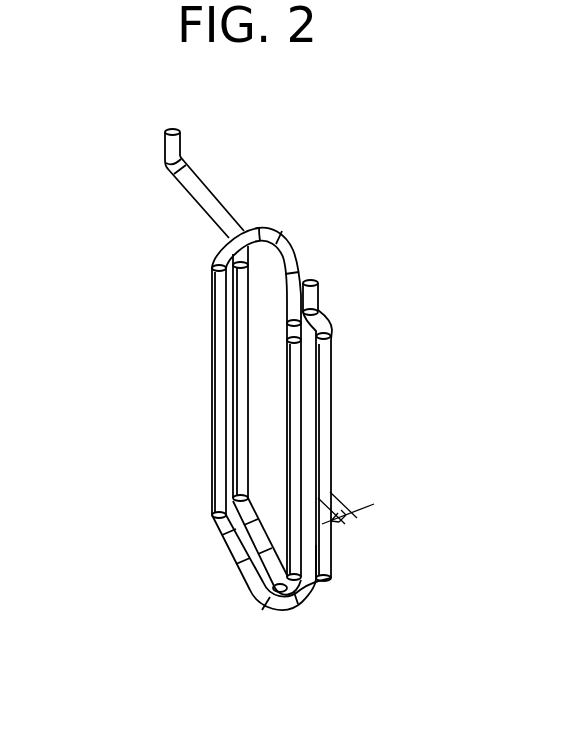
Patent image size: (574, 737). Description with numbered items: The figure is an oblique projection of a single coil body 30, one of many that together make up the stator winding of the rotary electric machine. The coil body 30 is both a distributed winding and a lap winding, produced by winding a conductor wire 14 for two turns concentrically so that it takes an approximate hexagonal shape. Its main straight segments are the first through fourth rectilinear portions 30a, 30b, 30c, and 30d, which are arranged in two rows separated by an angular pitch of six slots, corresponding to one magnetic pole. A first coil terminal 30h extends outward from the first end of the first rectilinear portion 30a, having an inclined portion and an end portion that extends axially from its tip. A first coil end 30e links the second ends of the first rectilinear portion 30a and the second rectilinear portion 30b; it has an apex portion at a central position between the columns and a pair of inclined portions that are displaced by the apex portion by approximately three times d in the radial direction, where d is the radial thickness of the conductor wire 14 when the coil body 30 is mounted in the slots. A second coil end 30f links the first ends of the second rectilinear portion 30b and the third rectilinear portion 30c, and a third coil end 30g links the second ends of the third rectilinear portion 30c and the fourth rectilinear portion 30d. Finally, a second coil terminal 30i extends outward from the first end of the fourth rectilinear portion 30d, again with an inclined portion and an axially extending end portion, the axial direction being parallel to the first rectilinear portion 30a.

The coil body 30 is at (77, 91).
The first rectilinear portion 30a is at (323, 403).
The second rectilinear portion 30b is at (214, 418).
The third rectilinear portion 30c is at (298, 458).
The fourth rectilinear portion 30d is at (247, 366).
The first coil end 30e is at (250, 582).
The second coil end 30f is at (290, 235).
The third coil end 30g is at (253, 540).
The first coil terminal 30h is at (322, 301).
The second coil terminal 30i is at (197, 167).
The conductor wire 14 is at (332, 564).
The radial thickness of the conductor wire d is at (357, 504).